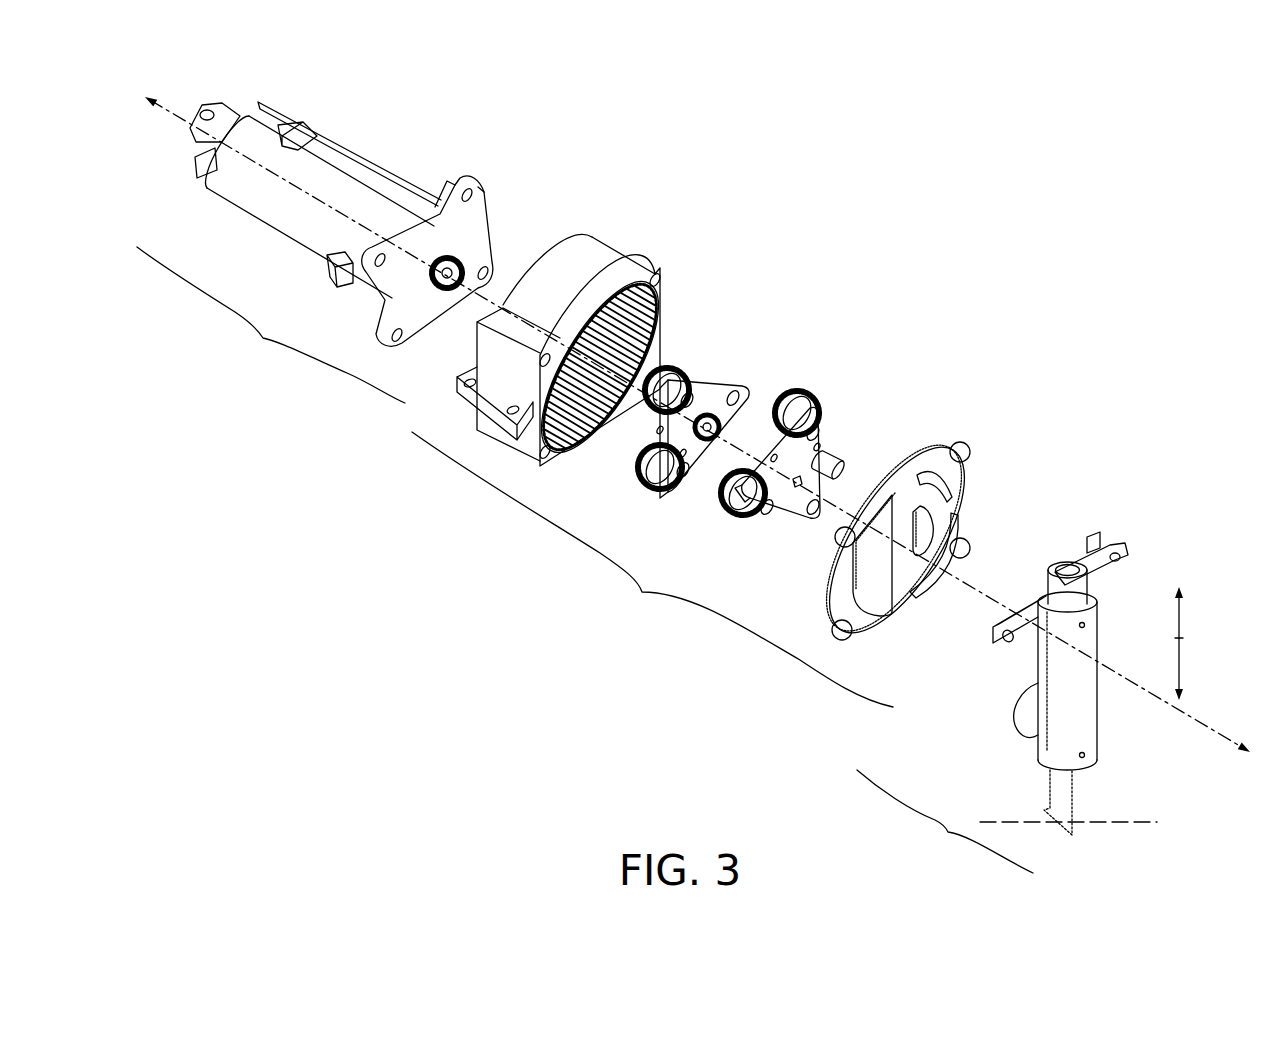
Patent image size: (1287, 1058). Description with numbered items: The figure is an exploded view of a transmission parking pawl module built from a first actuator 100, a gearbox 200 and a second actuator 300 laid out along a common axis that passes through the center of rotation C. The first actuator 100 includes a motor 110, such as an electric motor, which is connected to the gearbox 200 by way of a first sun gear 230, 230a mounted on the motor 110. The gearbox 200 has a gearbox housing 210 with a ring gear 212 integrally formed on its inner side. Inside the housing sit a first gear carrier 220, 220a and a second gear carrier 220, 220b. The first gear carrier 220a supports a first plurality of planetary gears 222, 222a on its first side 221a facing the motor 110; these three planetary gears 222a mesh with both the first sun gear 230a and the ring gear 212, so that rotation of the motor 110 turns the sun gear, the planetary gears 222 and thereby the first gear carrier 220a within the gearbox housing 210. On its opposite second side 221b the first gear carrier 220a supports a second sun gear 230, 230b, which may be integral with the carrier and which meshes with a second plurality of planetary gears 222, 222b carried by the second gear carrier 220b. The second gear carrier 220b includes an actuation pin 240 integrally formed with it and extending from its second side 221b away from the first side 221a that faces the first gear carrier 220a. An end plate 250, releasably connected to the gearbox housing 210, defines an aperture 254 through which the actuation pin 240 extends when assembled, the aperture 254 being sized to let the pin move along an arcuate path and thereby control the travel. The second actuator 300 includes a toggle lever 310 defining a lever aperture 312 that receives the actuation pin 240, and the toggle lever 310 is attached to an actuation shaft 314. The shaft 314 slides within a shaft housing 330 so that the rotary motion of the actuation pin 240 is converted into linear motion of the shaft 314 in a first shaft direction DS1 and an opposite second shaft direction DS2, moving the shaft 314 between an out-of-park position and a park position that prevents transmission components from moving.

The first actuator 100 is at (315, 252).
The motor 110 is at (262, 200).
The gearbox 200 is at (715, 448).
The gearbox housing 210 is at (568, 336).
The ring gear 212 is at (622, 423).
The gear carrier 220 is at (732, 475).
The first gear carrier 220a is at (700, 460).
The second gear carrier 220b is at (770, 508).
The first side 221a is at (656, 433).
The second side 221b is at (681, 458).
The planetary gears 222 is at (708, 452).
The first plurality of planetary gears 222a is at (624, 507).
The second plurality of planetary gears 222b is at (787, 575).
The sun gear 230 is at (744, 364).
The first sun gear 230a is at (452, 290).
The second sun gear 230b is at (718, 416).
The actuation pin 240 is at (838, 462).
The end plate 250 is at (947, 443).
The aperture 254 is at (923, 537).
The second actuator 300 is at (1007, 677).
The toggle lever 310 is at (1063, 562).
The lever aperture 312 is at (1090, 547).
The actuation shaft 314 is at (1067, 790).
The shaft housing 330 is at (1087, 646).
The center of rotation C is at (697, 432).
The first shaft direction DS1 is at (1181, 614).
The second shaft direction DS2 is at (1181, 667).